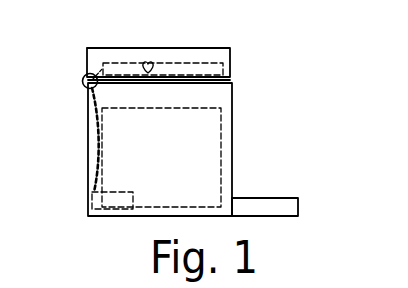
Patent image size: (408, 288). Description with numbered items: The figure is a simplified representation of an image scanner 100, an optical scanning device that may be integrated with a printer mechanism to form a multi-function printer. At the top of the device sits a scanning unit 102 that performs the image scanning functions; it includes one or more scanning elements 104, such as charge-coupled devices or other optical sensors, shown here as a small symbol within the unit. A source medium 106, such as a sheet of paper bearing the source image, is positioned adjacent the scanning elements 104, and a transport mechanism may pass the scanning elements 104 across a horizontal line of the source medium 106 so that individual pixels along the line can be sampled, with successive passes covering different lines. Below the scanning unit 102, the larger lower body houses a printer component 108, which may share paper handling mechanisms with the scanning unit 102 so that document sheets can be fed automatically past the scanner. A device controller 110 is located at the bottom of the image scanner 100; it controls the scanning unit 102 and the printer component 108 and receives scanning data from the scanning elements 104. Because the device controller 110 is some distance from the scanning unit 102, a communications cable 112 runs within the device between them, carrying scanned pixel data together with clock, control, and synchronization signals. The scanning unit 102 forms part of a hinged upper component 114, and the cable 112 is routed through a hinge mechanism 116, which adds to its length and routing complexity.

The image scanner 100 is at (315, 53).
The scanning unit 102 is at (183, 62).
The scanning elements 104 is at (145, 62).
The source medium 106 is at (229, 80).
The printer component 108 is at (221, 124).
The device controller 110 is at (92, 200).
The cable 112 is at (88, 100).
The hinged upper component 114 is at (222, 56).
The hinge mechanism 116 is at (83, 77).